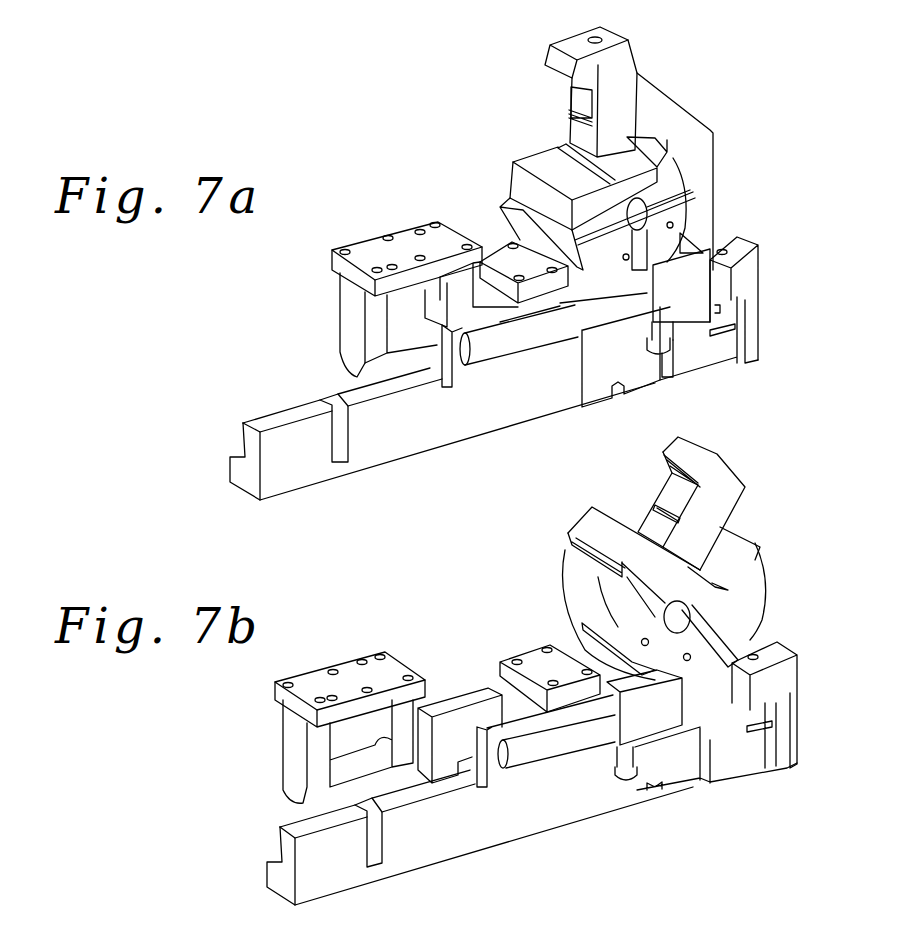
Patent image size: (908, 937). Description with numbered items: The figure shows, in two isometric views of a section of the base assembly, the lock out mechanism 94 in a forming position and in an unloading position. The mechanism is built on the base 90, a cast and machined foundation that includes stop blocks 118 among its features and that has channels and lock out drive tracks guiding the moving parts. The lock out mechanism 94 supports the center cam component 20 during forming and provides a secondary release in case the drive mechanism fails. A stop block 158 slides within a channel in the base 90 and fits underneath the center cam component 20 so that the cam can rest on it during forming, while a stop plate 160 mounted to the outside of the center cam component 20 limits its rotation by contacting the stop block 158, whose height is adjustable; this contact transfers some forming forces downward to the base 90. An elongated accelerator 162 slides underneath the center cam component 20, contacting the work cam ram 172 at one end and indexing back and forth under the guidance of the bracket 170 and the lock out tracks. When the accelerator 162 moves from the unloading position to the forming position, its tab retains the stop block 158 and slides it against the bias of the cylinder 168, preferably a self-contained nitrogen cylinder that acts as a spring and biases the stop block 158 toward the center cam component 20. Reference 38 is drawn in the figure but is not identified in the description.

In FIG. 7A, the lock out mechanism 94 is at (385, 100).
In FIG. 7B, the lock out mechanism 94 is at (408, 578).
In FIG. 7A, the base 90 is at (283, 477).
In FIG. 7B, the base 90 is at (330, 877).
In FIG. 7A, the work cam ram 172 is at (370, 250).
In FIG. 7B, the work cam ram 172 is at (313, 678).
In FIG. 7A, the accelerator 162 is at (503, 247).
In FIG. 7B, the accelerator 162 is at (450, 703).
In FIG. 7A, the bracket 170 is at (520, 233).
In FIG. 7B, the bracket 170 is at (530, 655).
In FIG. 7A, the cylinder 168 is at (531, 335).
In FIG. 7B, the cylinder 168 is at (543, 752).
In FIG. 7A, the stop block 158 is at (700, 282).
In FIG. 7B, the stop block 158 is at (665, 725).
In FIG. 7A, the stop block 118 is at (757, 260).
In FIG. 7B, the stop block 118 is at (783, 675).
In FIG. 7A, the clamp post 38 is at (627, 60).
In FIG. 7B, the clamp post 38 is at (722, 477).
In FIG. 7A, the center cam component 20 is at (672, 176).
In FIG. 7B, the center cam component 20 is at (713, 598).
In FIG. 7A, the stop plate 160 is at (697, 121).
In FIG. 7B, the stop plate 160 is at (757, 618).